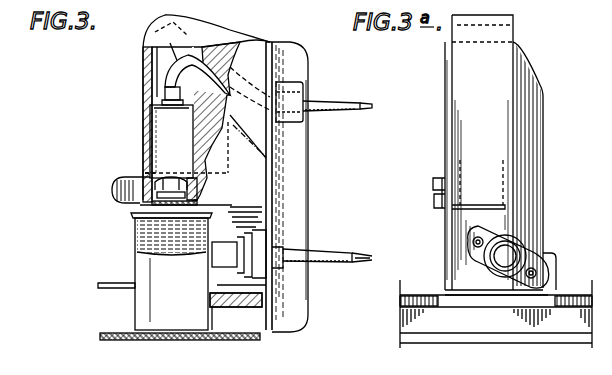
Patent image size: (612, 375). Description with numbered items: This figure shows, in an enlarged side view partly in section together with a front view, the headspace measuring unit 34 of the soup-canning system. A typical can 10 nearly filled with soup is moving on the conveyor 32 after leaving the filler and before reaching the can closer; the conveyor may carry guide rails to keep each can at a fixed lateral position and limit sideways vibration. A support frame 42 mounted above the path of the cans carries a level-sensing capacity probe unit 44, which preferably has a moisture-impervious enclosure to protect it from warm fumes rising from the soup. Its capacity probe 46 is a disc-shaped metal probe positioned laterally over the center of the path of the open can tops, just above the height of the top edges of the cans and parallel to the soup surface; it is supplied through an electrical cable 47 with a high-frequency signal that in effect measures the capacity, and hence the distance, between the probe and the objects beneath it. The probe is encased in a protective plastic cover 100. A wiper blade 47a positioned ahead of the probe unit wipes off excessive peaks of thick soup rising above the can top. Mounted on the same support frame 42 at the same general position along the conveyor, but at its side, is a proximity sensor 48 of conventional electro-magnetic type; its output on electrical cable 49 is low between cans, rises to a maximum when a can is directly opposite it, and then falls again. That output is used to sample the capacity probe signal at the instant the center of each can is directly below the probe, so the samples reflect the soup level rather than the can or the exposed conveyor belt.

In FIG. 3, the can 10 is at (135, 272).
In FIG. 3, the conveyor 32 is at (105, 333).
In FIG. 3A, the conveyor 32 is at (432, 334).
In FIG. 3, the headspace measuring unit 34 is at (316, 170).
In FIG. 3A, the headspace measuring unit 34 is at (552, 126).
In FIG. 3, the support frame 42 is at (143, 77).
In FIG. 3, the level-sensing capacity probe unit 44 is at (186, 136).
In FIG. 3, the capacity probe 46 is at (162, 180).
In FIG. 3, the electrical cable 47 is at (334, 102).
In FIG. 3, the wiper blade 47a is at (128, 178).
In FIG. 3A, the wiper blade 47a is at (441, 211).
In FIG. 3, the proximity sensor 48 is at (213, 262).
In FIG. 3A, the proximity sensor 48 is at (510, 257).
In FIG. 3, the electrical cable 49 is at (340, 253).
In FIG. 3, the protective plastic cover 100 is at (204, 187).